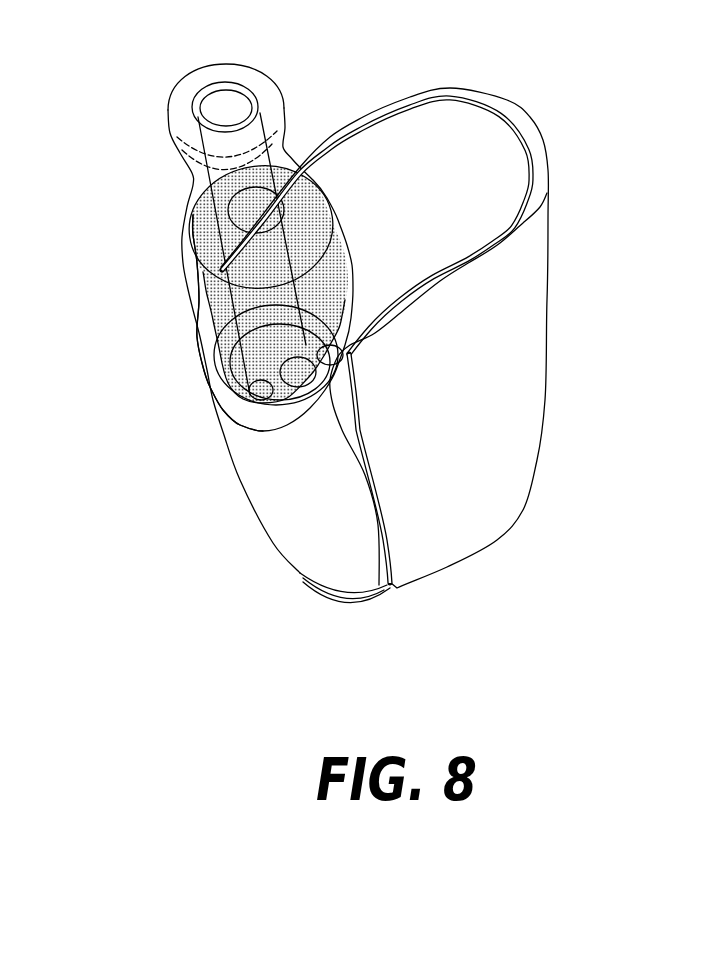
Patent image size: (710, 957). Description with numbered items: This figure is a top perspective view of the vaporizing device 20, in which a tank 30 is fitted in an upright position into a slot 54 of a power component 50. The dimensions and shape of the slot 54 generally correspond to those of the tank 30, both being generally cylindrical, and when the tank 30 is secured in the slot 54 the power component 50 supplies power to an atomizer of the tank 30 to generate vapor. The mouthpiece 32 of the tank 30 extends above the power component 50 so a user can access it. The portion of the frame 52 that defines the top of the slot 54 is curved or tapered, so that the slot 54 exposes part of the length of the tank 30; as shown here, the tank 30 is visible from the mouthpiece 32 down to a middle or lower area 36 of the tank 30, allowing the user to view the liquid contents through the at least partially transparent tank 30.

The vaporizing device 20 is at (598, 55).
The tank 30 is at (161, 259).
The mouthpiece 32 is at (178, 112).
The middle or lower area 36 is at (258, 352).
The power component 50 is at (594, 396).
The frame 52 is at (267, 493).
The slot 54 is at (230, 403).